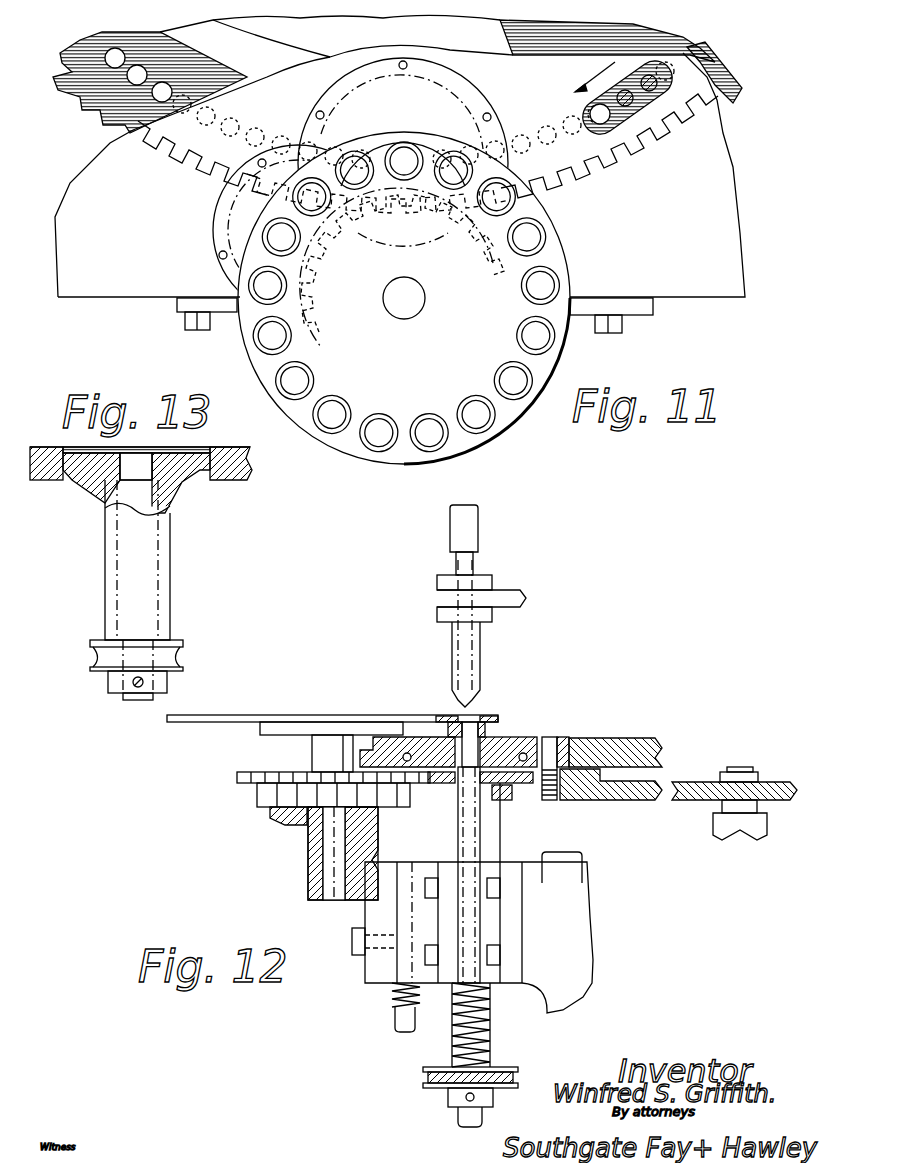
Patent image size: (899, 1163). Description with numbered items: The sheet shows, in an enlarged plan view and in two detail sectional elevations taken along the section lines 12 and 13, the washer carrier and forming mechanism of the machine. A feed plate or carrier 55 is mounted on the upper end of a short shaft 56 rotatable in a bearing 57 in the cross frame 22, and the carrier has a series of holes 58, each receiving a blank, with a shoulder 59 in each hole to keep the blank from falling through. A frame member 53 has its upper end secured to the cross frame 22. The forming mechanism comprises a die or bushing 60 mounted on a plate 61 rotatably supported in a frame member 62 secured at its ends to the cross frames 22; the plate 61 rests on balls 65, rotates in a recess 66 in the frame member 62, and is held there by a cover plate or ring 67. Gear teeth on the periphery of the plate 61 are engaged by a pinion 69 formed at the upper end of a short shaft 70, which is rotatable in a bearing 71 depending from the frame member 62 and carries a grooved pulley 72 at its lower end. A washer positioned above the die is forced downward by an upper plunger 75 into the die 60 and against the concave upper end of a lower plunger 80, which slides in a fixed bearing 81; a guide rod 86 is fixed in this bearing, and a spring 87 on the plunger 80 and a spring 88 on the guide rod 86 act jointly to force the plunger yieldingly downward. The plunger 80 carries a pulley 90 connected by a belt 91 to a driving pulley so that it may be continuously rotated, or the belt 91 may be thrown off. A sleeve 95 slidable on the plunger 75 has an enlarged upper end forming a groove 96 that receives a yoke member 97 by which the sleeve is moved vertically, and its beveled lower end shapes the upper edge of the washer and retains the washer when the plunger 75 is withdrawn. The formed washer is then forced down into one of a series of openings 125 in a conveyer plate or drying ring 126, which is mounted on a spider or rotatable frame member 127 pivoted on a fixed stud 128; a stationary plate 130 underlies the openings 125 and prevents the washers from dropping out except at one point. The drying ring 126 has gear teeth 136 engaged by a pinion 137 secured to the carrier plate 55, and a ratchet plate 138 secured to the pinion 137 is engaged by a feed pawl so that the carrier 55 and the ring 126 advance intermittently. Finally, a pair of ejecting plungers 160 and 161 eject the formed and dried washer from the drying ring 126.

In FIG. 11, the section line 12 is at (383, 22).
In FIG. 11, the section line 13 is at (246, 216).
In FIG. 12, the cross frame 22 is at (278, 817).
In FIG. 12, the frame member 53 is at (590, 990).
In FIG. 11, the feed plate or carrier 55 is at (347, 442).
In FIG. 12, the feed plate or carrier 55 is at (218, 720).
In FIG. 11, the short shaft 56 is at (413, 303).
In FIG. 12, the short shaft 56 is at (336, 884).
In FIG. 12, the bearing 57 is at (313, 856).
In FIG. 11, the holes 58 is at (493, 423).
In FIG. 12, the holes 58 is at (478, 716).
In FIG. 11, the shoulder 59 is at (477, 430).
In FIG. 12, the die or bushing 60 is at (457, 722).
In FIG. 11, the plate 61 is at (433, 115).
In FIG. 12, the plate 61 is at (498, 755).
In FIG. 11, the frame member 62 is at (134, 298).
In FIG. 13, the frame member 62 is at (240, 478).
In FIG. 12, the frame member 62 is at (655, 740).
In FIG. 12, the balls 65 is at (410, 762).
In FIG. 12, the recess 66 is at (560, 795).
In FIG. 11, the cover plate or ring 67 is at (450, 82).
In FIG. 12, the cover plate or ring 67 is at (552, 753).
In FIG. 11, the pinion 69 is at (228, 243).
In FIG. 13, the pinion 69 is at (173, 480).
In FIG. 13, the short shaft 70 is at (128, 503).
In FIG. 13, the bearing 71 is at (106, 585).
In FIG. 13, the grooved pulley 72 is at (103, 660).
In FIG. 12, the upper plunger 75 is at (478, 536).
In FIG. 12, the lower plunger 80 is at (460, 835).
In FIG. 12, the fixed bearing 81 is at (495, 982).
In FIG. 12, the guide rod 86 is at (398, 1022).
In FIG. 12, the spring 87 is at (487, 1032).
In FIG. 12, the spring 88 is at (395, 1005).
In FIG. 12, the pulley 90 is at (430, 1068).
In FIG. 12, the belt 91 is at (425, 1082).
In FIG. 12, the sleeve 95 is at (455, 653).
In FIG. 12, the groove 96 is at (445, 592).
In FIG. 12, the yoke member 97 is at (510, 596).
In FIG. 11, the openings 125 is at (285, 116).
In FIG. 11, the conveyer plate or drying ring 126 is at (92, 50).
In FIG. 12, the conveyer plate or drying ring 126 is at (524, 782).
In FIG. 11, the spider or rotatable frame member 127 is at (280, 40).
In FIG. 12, the spider or rotatable frame member 127 is at (683, 801).
In FIG. 12, the fixed stud 128 is at (743, 770).
In FIG. 12, the stationary plate 130 is at (495, 800).
In FIG. 11, the gear teeth 136 is at (83, 118).
In FIG. 11, the pinion 137 is at (500, 265).
In FIG. 12, the pinion 137 is at (236, 778).
In FIG. 12, the ratchet plate 138 is at (260, 794).
In FIG. 11, the ejecting plunger 160 is at (649, 91).
In FIG. 11, the ejecting plunger 161 is at (625, 106).